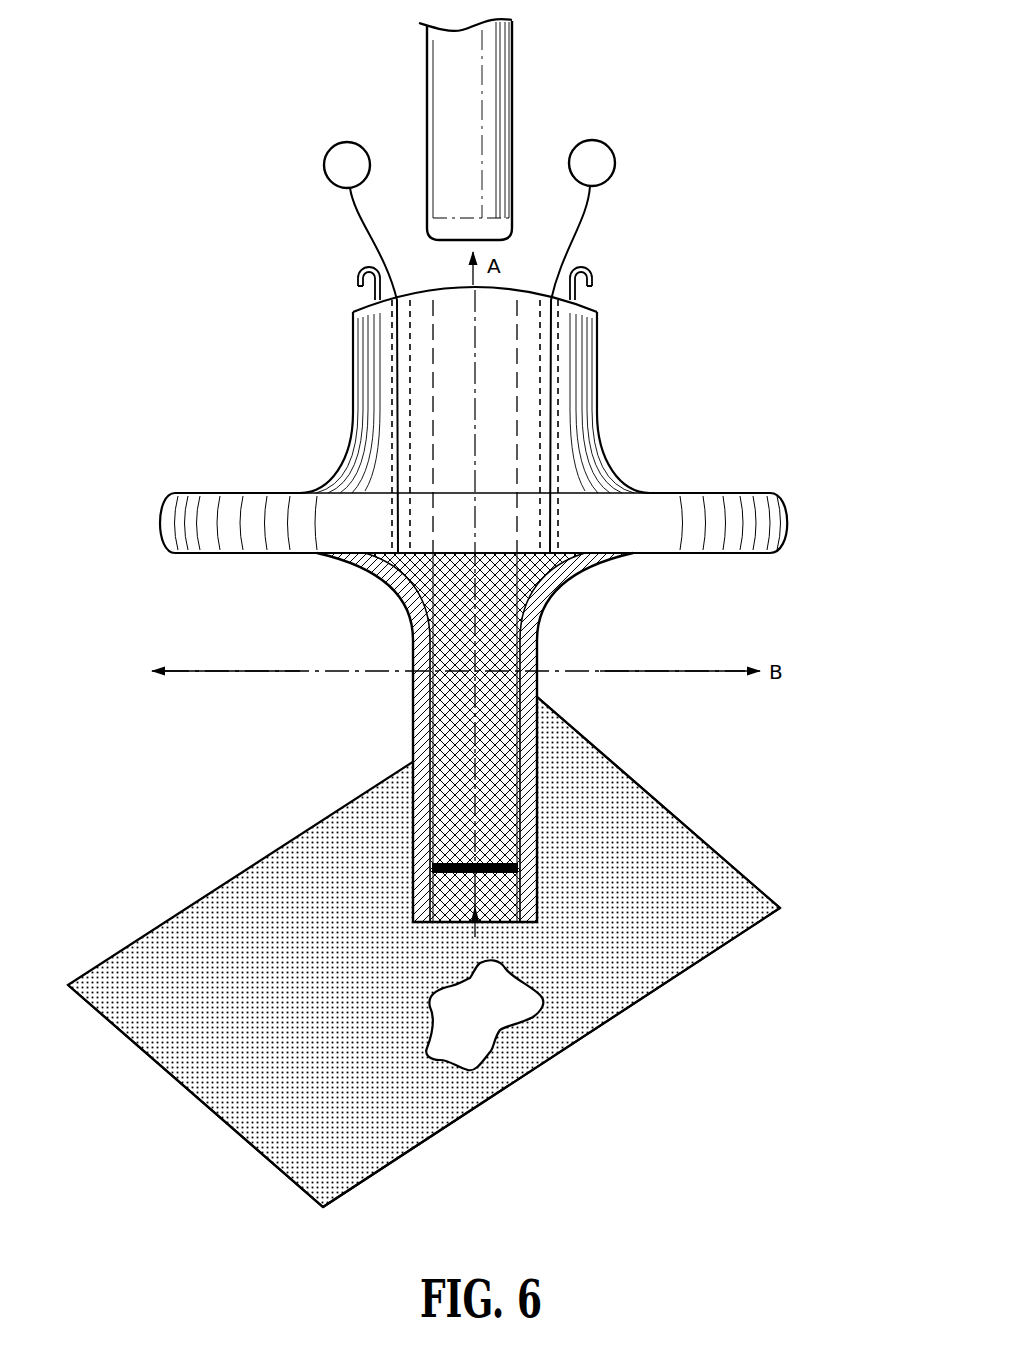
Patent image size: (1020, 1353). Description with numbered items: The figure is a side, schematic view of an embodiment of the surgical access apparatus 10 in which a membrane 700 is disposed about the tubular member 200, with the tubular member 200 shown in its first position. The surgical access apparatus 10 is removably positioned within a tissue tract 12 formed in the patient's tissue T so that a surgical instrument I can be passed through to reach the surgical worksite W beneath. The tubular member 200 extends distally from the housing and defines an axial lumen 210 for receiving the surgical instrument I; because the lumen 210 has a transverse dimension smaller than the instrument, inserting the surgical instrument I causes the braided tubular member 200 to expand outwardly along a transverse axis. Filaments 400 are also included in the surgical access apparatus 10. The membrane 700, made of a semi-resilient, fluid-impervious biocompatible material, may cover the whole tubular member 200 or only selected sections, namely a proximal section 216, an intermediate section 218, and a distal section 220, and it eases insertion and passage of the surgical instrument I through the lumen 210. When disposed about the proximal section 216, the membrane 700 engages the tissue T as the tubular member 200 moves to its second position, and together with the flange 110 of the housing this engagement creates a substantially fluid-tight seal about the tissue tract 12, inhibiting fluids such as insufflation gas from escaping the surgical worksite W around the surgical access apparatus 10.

The surgical access apparatus 10 is at (697, 150).
The flange 110 is at (783, 488).
The filaments 400 is at (357, 227).
The proximal section 216 is at (493, 737).
The membrane 700 is at (540, 650).
The axial lumen 210 is at (455, 712).
The intermediate section 218 is at (558, 726).
The tubular member 200 is at (375, 806).
The distal section 220 is at (560, 898).
The tissue tract 12 is at (503, 1027).
The surgical instrument I is at (513, 68).
The tissue T is at (165, 950).
The surgical worksite W is at (670, 1013).